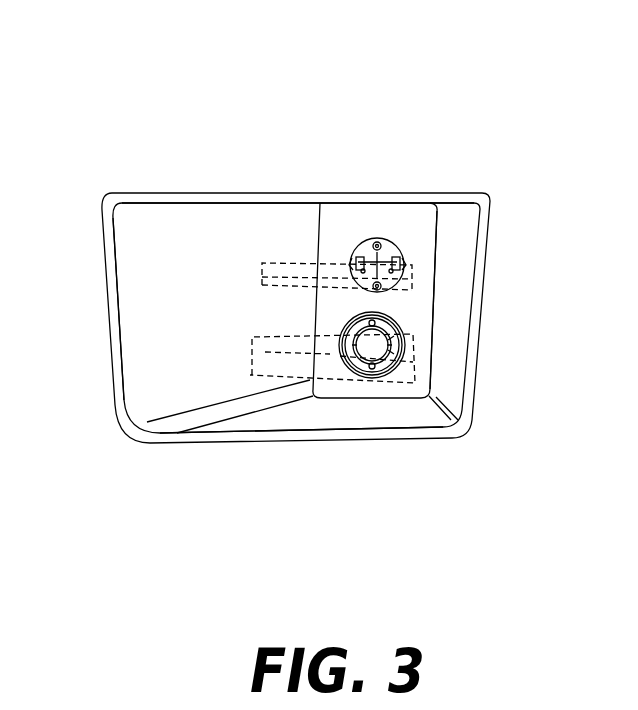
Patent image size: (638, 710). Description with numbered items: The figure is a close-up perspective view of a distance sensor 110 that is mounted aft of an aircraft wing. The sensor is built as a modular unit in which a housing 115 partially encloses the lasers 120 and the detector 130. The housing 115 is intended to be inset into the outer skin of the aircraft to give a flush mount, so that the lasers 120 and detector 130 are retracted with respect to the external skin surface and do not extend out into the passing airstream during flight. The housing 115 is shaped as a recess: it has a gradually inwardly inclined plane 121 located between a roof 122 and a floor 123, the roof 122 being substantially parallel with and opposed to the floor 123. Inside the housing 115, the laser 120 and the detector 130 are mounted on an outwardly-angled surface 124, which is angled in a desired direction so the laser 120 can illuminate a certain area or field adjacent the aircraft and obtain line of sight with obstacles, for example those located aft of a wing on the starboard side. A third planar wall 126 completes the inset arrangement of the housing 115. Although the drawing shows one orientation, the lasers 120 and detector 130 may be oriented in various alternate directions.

The distance sensor 110 is at (283, 59).
The housing 115 is at (270, 194).
The lasers 120 is at (403, 257).
The gradually inwardly inclined plane 121 is at (162, 342).
The roof 122 is at (190, 207).
The floor 123 is at (297, 415).
The outwardly-angled surface 124 is at (401, 223).
The third planar wall 126 is at (453, 394).
The detector 130 is at (403, 330).